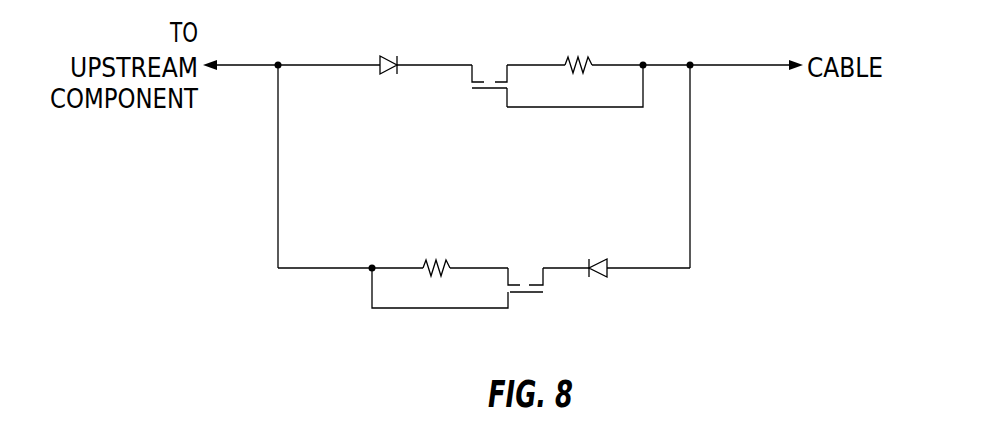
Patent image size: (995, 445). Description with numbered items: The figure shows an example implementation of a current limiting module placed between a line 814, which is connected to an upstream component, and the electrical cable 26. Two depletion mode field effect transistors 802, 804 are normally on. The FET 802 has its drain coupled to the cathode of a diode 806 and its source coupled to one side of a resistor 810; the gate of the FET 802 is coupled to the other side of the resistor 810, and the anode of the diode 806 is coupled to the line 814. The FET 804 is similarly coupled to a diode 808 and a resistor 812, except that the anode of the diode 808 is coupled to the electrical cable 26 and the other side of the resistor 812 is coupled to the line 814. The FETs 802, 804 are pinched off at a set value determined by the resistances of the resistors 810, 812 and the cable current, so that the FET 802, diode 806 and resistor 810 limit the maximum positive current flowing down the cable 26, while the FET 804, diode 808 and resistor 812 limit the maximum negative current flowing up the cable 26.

The line 814 is at (256, 42).
The diode 806 is at (415, 44).
The depletion mode field effect transistor 802 is at (516, 61).
The resistor 810 is at (582, 61).
The electrical cable 26 is at (746, 42).
The resistor 812 is at (440, 264).
The depletion mode field effect transistor 804 is at (554, 254).
The diode 808 is at (629, 295).